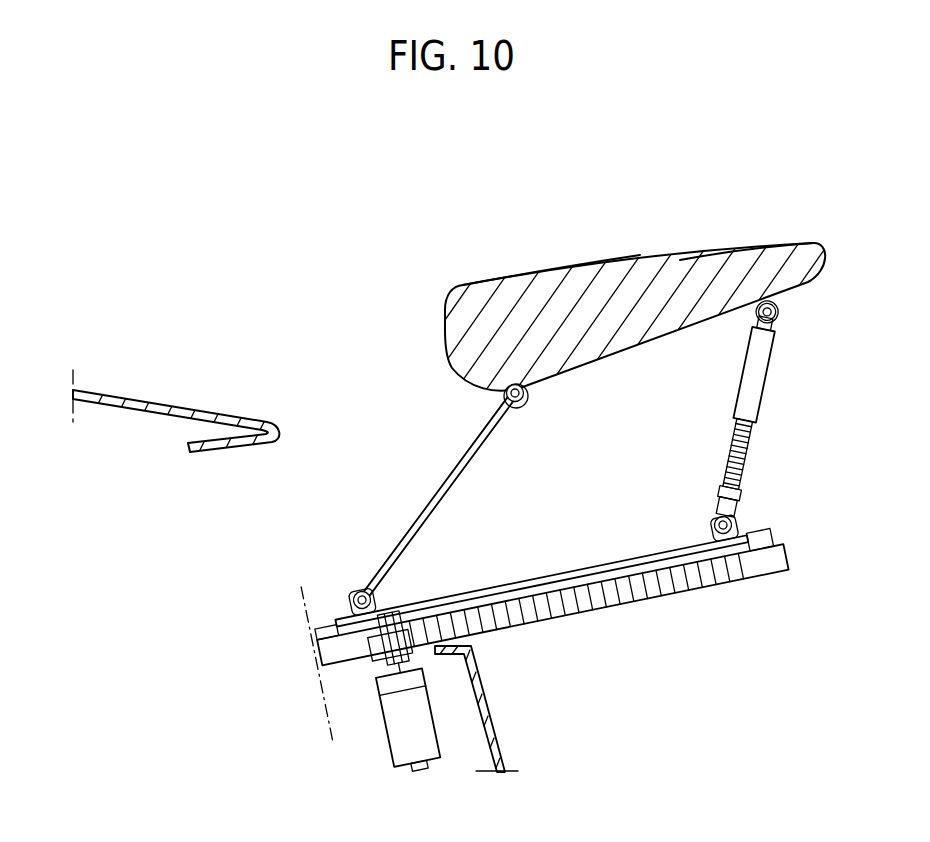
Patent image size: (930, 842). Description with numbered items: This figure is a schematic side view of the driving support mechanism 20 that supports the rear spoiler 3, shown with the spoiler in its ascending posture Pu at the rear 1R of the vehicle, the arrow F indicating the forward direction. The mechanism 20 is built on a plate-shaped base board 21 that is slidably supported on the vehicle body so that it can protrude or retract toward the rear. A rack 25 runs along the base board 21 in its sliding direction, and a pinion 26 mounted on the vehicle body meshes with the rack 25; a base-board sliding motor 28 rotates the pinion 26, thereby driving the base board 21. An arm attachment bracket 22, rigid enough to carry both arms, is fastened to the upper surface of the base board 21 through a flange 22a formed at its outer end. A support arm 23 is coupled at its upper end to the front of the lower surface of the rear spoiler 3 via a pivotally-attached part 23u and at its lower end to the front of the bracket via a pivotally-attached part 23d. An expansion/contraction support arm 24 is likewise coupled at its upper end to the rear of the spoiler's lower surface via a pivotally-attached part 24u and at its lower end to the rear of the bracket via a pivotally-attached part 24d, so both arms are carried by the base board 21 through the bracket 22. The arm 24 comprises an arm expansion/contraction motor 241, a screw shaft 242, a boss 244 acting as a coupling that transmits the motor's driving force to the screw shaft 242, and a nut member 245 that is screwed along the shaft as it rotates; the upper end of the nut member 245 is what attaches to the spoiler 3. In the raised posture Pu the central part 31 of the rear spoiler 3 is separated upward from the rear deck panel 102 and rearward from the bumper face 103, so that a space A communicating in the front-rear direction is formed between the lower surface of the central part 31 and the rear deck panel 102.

The rear spoiler 3 is at (668, 248).
The central part 31 is at (731, 243).
The ascending posture Pu is at (581, 252).
The rear deck panel 102 is at (135, 399).
The rear of the vehicle 1R is at (167, 372).
The forward direction F is at (287, 287).
The space A is at (327, 406).
The driving support mechanism 20 is at (418, 426).
The support arm 23 is at (443, 486).
The pivotally-attached part 23u is at (526, 406).
The pivotally-attached part 23d is at (358, 590).
The expansion/contraction support arm 24 is at (741, 420).
The pivotally-attached part 24u is at (766, 315).
The nut member 245 is at (753, 375).
The screw shaft 242 is at (738, 454).
The boss 244 is at (730, 493).
The arm expansion/contraction motor 241 is at (726, 507).
The pivotally-attached part 24d is at (723, 525).
The base board 21 is at (766, 599).
The arm attachment bracket 22 is at (548, 574).
The flange 22a is at (334, 625).
The rack 25 is at (573, 613).
The pinion 26 is at (372, 658).
The base-board sliding motor 28 is at (386, 732).
The bumper face 103 is at (486, 700).